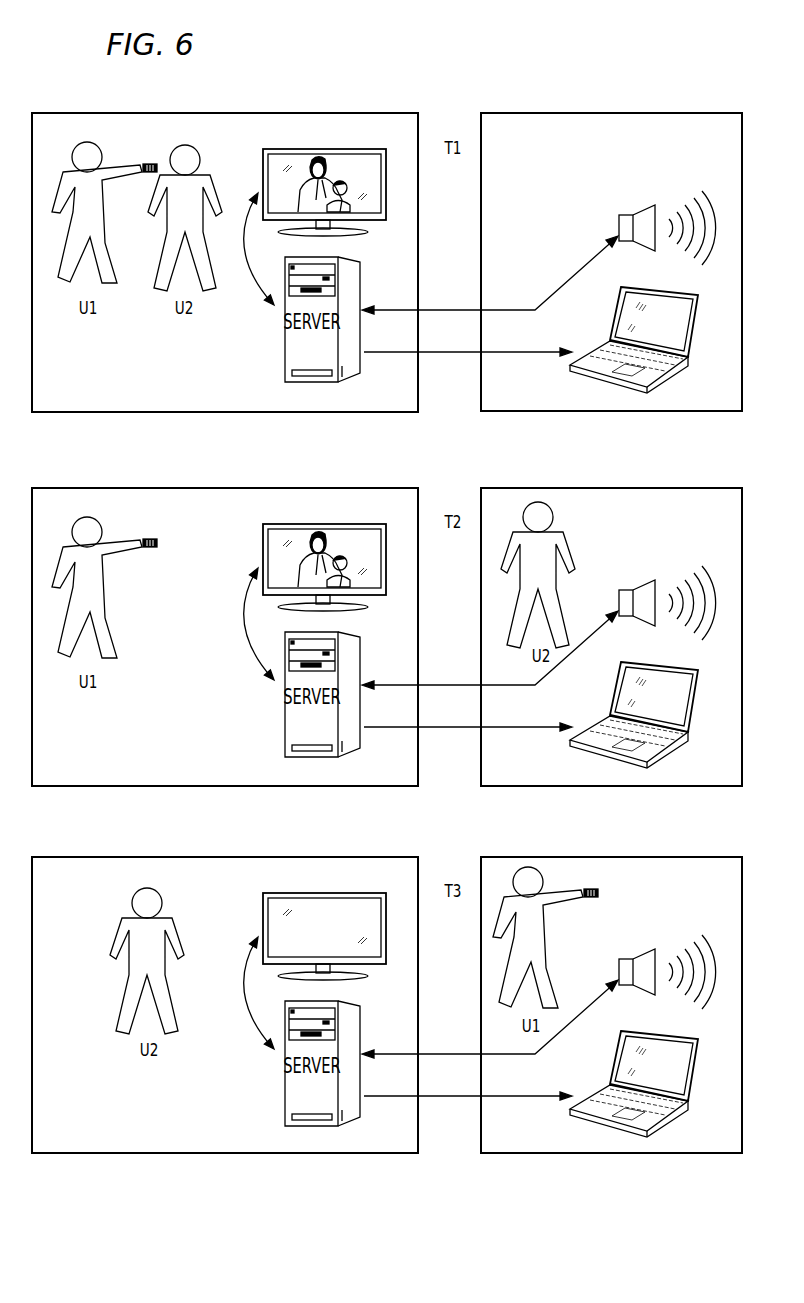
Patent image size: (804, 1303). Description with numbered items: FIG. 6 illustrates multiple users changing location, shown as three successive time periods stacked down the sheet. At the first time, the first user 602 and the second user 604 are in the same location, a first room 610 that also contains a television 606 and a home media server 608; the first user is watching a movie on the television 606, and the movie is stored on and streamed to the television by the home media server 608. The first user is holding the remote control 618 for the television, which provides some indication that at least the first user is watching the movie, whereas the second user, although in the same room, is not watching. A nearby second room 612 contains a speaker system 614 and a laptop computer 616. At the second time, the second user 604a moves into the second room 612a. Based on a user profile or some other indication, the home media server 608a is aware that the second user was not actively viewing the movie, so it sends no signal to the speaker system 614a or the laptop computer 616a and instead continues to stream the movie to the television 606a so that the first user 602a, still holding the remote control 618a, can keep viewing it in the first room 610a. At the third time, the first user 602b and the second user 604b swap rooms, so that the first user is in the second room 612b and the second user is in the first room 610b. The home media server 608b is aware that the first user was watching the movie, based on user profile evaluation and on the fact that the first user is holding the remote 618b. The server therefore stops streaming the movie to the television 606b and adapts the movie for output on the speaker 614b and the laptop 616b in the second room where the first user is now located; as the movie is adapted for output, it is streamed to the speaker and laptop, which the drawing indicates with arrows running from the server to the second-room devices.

The U1 602 is at (87, 142).
The U2 604 is at (185, 145).
The television 606 is at (325, 149).
The home media server 608 is at (284, 350).
The first room 610 is at (243, 113).
The second room 612 is at (610, 113).
The speaker system 614 is at (631, 215).
The laptop computer 616 is at (617, 311).
The remote control 618 is at (150, 163).
The U1 602a is at (87, 517).
The U2 604a is at (539, 502).
The television 606a is at (325, 524).
The home media server 608a is at (284, 725).
The first room 610a is at (243, 488).
The second room 612a is at (610, 488).
The speaker system 614a is at (631, 590).
The laptop computer 616a is at (617, 686).
The remote control 618a is at (150, 548).
The U1 602b is at (529, 867).
The U2 604b is at (148, 888).
The television 606b is at (325, 893).
The home media server 608b is at (284, 1094).
The first room 610b is at (243, 857).
The second room 612b is at (610, 857).
The speaker 614b is at (631, 959).
The laptop 616b is at (617, 1055).
The remote 618b is at (590, 898).